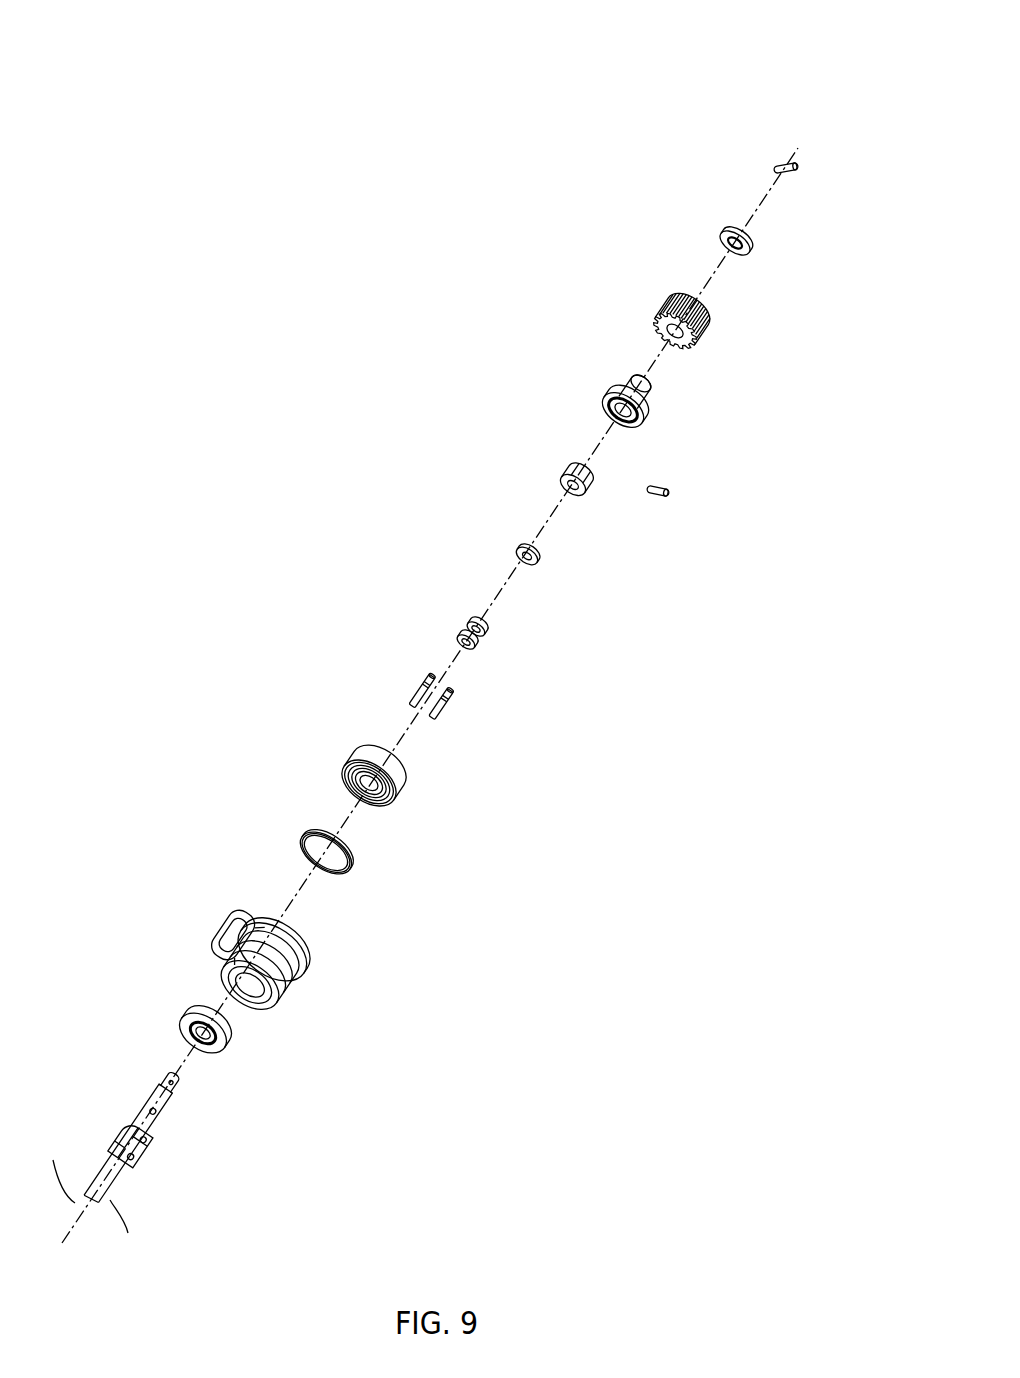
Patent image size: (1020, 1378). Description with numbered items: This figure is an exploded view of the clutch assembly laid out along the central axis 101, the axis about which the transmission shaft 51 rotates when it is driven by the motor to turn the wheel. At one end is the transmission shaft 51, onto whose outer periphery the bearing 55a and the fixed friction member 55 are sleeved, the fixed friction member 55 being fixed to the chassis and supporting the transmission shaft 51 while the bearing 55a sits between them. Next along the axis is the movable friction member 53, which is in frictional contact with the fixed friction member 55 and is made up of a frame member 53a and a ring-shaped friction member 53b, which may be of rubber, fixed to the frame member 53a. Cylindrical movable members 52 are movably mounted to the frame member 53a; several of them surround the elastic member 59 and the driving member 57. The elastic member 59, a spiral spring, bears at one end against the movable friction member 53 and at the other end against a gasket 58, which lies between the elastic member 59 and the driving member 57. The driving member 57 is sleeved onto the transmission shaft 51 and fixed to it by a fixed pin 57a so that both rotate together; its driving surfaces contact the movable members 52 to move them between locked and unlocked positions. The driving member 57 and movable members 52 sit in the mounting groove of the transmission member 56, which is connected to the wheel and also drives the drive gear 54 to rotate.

The central axis 101 is at (790, 166).
The transmission shaft 51 is at (118, 1193).
The movable member 52 is at (451, 712).
The movable friction member 53 is at (432, 858).
The frame member 53a is at (410, 797).
The friction member 53b is at (349, 879).
The drive gear 54 is at (713, 345).
The fixed friction member 55 is at (296, 987).
The bearing 55a is at (233, 1054).
The transmission member 56 is at (652, 418).
The driving member 57 is at (588, 494).
The fixed pin 57a is at (668, 505).
The gasket 58 is at (541, 572).
The elastic member 59 is at (459, 630).